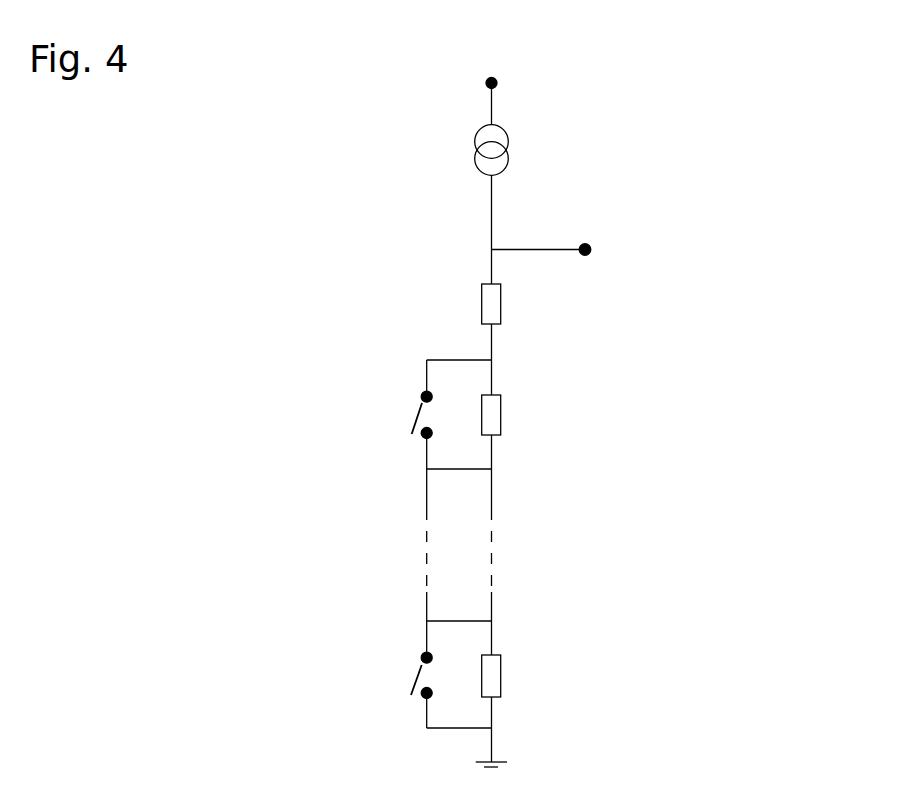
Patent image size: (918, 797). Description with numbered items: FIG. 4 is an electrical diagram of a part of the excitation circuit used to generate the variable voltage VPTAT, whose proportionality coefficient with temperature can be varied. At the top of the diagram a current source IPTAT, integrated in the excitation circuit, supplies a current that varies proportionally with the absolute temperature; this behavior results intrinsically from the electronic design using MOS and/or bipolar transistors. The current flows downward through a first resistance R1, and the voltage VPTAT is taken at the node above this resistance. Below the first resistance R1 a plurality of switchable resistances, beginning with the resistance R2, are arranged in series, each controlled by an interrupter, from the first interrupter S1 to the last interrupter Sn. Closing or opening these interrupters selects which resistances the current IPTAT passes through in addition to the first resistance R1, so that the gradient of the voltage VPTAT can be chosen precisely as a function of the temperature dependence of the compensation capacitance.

The first resistance R1 is at (498, 303).
The switchable resistance R2 is at (493, 424).
The interrupter S1 is at (404, 415).
The interrupter Sn is at (405, 672).
The current source IPTAT is at (533, 125).
The variable voltage VPTAT is at (568, 250).